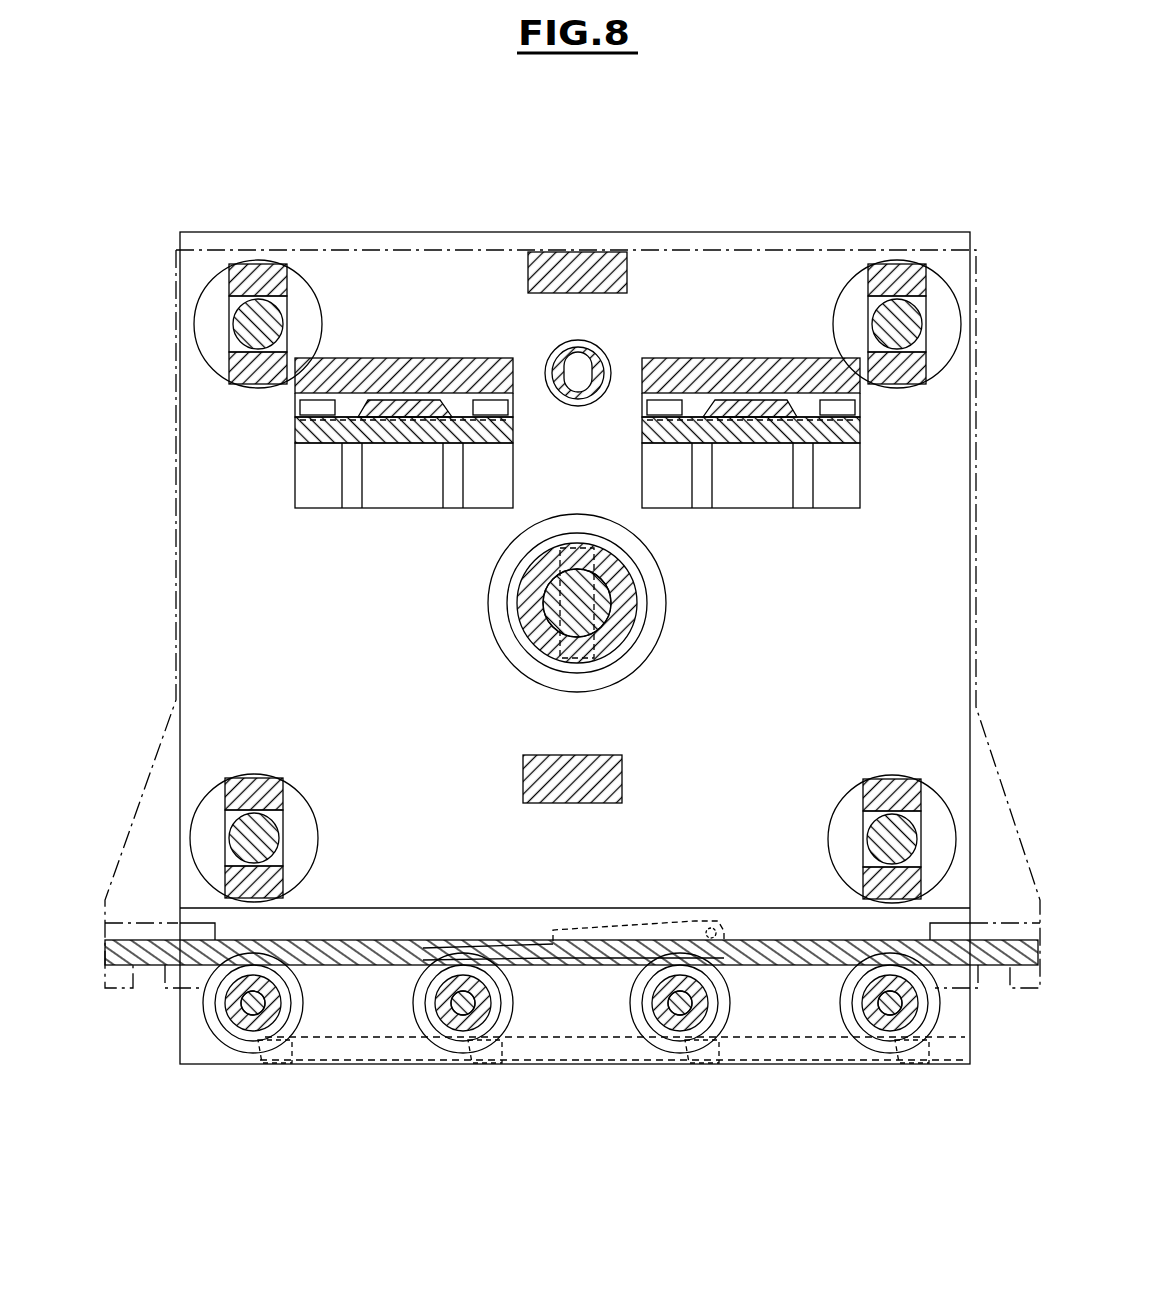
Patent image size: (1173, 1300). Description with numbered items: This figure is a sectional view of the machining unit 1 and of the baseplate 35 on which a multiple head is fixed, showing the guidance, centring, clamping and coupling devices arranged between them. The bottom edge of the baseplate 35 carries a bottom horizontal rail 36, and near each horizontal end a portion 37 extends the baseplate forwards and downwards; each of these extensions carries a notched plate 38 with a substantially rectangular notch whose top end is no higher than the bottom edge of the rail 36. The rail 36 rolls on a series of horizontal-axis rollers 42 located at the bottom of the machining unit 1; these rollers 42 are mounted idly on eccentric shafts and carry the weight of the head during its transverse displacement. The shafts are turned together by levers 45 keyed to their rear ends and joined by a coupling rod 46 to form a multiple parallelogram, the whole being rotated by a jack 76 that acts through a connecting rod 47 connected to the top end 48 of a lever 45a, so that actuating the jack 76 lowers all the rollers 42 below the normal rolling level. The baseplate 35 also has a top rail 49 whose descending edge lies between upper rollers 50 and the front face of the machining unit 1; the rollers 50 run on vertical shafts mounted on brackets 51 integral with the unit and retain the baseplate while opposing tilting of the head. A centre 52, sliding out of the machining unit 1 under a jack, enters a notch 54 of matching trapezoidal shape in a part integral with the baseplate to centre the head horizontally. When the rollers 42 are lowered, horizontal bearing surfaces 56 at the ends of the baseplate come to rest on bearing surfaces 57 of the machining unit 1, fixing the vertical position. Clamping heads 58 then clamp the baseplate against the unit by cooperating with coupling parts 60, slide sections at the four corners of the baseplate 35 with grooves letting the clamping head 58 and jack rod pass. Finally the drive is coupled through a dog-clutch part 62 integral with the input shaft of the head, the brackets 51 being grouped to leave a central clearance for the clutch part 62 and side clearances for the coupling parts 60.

The machining unit 1 is at (458, 232).
The baseplate 35 is at (978, 553).
The bottom horizontal rail 36 is at (385, 945).
The portion extending the baseplate forwards and downwards 37 is at (122, 838).
The notched plate 38 is at (165, 978).
The horizontal-axis rollers 42 is at (236, 1018).
The levers 45 is at (290, 1048).
The lever 45a is at (470, 1040).
The coupling rod 46 is at (598, 1037).
The connecting rod 47 is at (528, 963).
The top end of lever 48 is at (437, 945).
The top rail 49 is at (458, 408).
The rollers 50 is at (305, 413).
The brackets 51 is at (385, 440).
The centre 52 is at (578, 370).
The notch 54 is at (562, 392).
The horizontal bearing surfaces 56 is at (383, 378).
The bearing surfaces 57 is at (404, 407).
The clamping heads 58 is at (262, 322).
The coupling parts 60 is at (243, 290).
The dog-clutch part 62 is at (556, 614).
The jack 76 is at (623, 925).